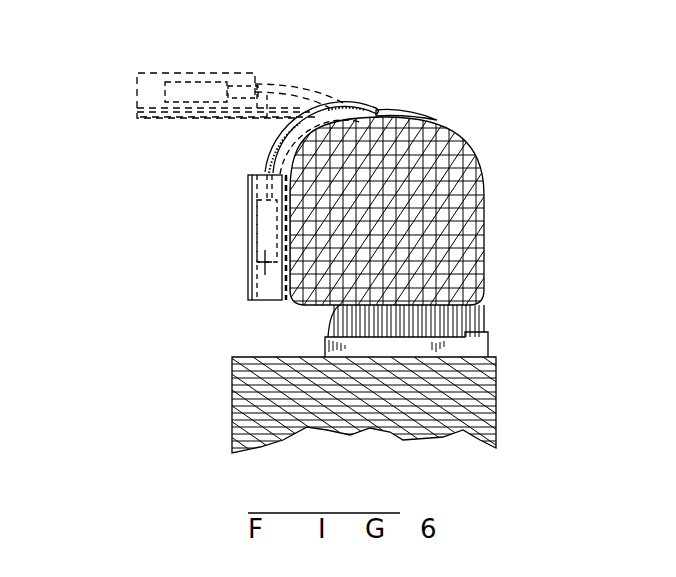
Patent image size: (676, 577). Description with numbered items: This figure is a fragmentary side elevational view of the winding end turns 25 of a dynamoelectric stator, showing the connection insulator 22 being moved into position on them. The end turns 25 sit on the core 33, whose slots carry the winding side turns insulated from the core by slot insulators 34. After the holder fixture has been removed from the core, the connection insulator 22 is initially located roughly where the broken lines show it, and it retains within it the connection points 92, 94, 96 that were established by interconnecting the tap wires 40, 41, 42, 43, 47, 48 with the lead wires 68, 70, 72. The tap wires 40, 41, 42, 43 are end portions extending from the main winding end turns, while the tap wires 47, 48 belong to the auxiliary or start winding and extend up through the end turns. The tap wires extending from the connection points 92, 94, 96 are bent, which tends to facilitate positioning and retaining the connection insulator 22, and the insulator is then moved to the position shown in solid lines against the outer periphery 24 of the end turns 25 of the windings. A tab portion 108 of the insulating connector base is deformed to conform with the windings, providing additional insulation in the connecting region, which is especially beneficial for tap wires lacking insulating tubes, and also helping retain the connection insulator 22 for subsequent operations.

The connection insulator 22 is at (196, 164).
The outer periphery 24 is at (292, 219).
The winding end turns 25 is at (480, 267).
The core 33 is at (232, 400).
The slot insulators 34 is at (327, 347).
The tab portion 108 is at (403, 113).
The connection point 92 is at (191, 152).
The connection point 94 is at (191, 152).
The connection point 96 is at (192, 82).
The lead wire 68 is at (253, 103).
The lead wire 70 is at (253, 103).
The lead wire 72 is at (291, 83).
The tap wire 40 is at (184, 129).
The tap wire 41 is at (184, 129).
The tap wire 42 is at (184, 129).
The tap wire 43 is at (184, 129).
The tap wire 47 is at (184, 129).
The tap wire 48 is at (268, 114).